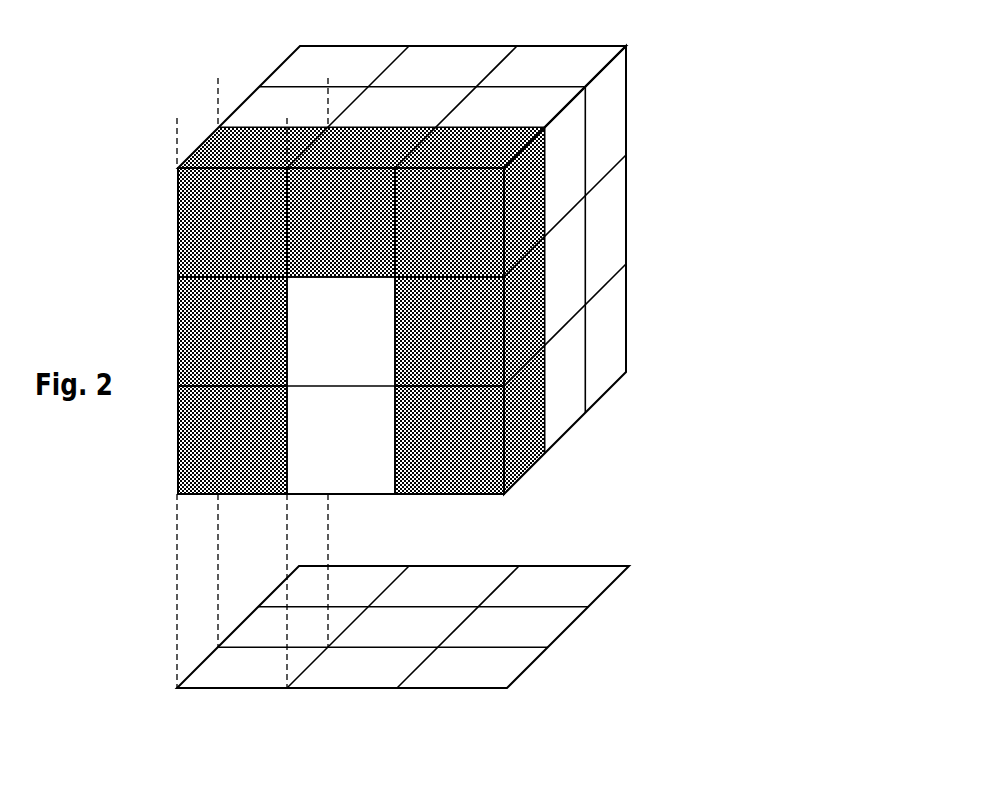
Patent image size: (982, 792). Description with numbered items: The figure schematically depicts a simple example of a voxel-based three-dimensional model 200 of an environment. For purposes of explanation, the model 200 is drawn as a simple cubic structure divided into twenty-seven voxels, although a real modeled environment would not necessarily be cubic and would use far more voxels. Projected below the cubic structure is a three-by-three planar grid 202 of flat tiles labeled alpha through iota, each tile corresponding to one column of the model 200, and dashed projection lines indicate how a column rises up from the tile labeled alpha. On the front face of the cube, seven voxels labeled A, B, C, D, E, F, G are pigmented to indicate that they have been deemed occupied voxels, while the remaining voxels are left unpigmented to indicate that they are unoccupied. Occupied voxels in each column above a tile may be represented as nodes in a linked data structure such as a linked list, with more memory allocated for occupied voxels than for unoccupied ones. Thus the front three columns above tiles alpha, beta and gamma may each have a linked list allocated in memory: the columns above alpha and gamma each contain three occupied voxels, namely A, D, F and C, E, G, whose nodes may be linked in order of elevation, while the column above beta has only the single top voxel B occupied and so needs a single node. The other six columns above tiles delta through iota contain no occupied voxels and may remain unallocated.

The voxel-based 3D model 200 is at (444, 270).
The planar grid 202 is at (642, 577).
The occupied voxel A is at (232, 222).
The occupied voxel B is at (341, 222).
The occupied voxel C is at (449, 222).
The occupied voxel D is at (232, 331).
The occupied voxel E is at (449, 331).
The occupied voxel F is at (232, 440).
The occupied voxel G is at (449, 440).